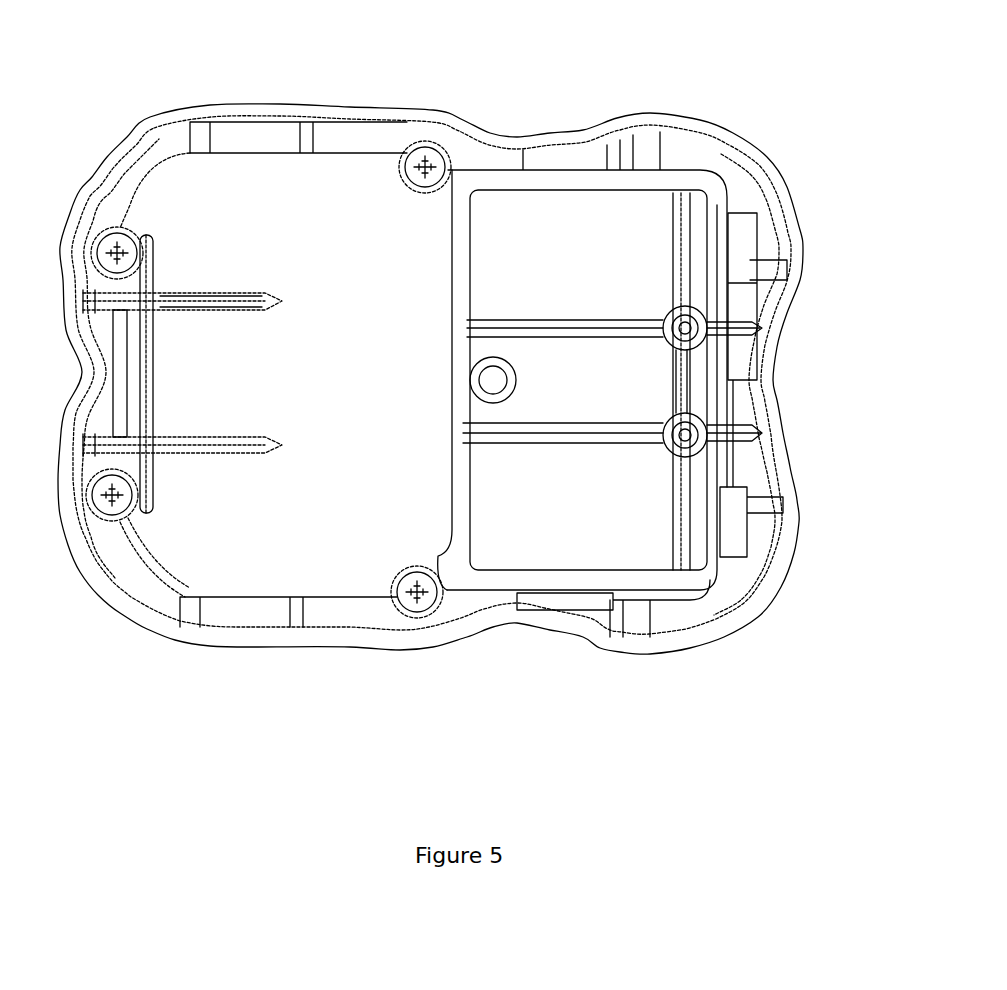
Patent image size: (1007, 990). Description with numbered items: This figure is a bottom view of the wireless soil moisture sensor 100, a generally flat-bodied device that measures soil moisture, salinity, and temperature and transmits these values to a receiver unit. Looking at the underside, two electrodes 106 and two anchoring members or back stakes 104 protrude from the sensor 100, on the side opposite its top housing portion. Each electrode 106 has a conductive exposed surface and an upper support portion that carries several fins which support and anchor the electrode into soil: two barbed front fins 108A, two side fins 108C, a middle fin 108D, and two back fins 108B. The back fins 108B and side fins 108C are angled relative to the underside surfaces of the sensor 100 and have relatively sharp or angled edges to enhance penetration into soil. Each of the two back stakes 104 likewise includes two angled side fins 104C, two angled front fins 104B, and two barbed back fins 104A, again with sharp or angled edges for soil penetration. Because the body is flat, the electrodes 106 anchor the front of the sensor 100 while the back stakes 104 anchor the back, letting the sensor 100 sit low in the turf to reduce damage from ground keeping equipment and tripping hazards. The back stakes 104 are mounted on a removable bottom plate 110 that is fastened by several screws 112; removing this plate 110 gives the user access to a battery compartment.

The wireless soil moisture sensor 100 is at (177, 703).
The anchoring members or stakes 104 is at (174, 262).
The barbed back fins 104A is at (97, 300).
The angled front fins 104B is at (217, 300).
The angled side fins 104C is at (147, 233).
The electrodes 106 is at (680, 445).
The barbed front fins 108A is at (748, 330).
The back fins 108B is at (600, 320).
The side fins 108C is at (688, 277).
The middle fin 108D is at (680, 390).
The removable bottom plate 110 is at (170, 545).
The screws 112 is at (418, 603).